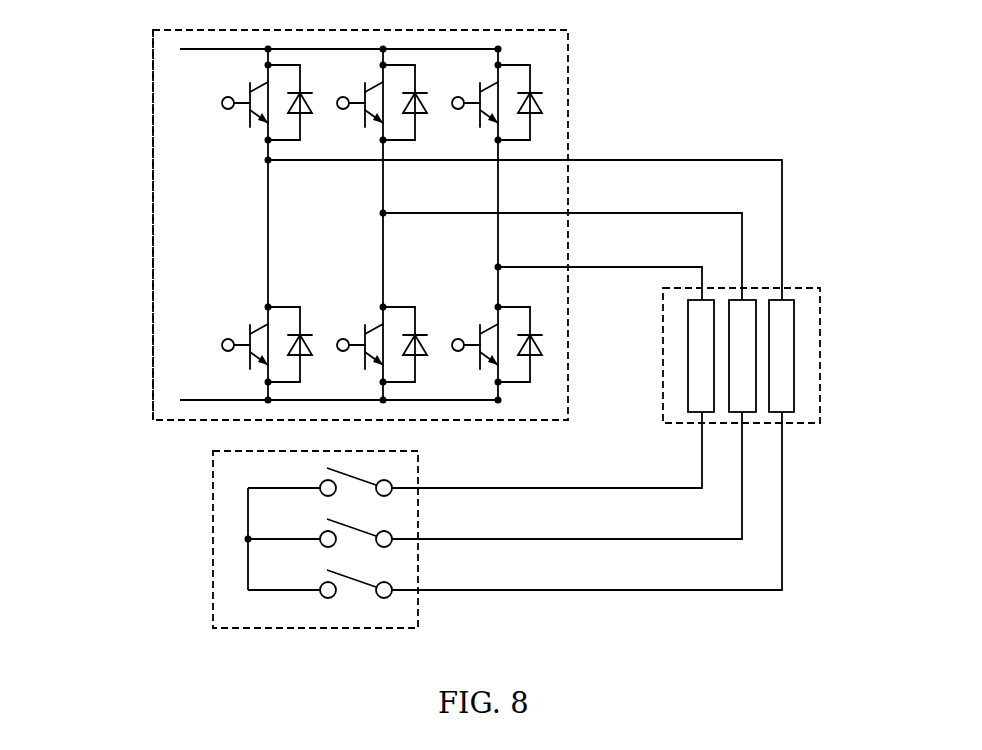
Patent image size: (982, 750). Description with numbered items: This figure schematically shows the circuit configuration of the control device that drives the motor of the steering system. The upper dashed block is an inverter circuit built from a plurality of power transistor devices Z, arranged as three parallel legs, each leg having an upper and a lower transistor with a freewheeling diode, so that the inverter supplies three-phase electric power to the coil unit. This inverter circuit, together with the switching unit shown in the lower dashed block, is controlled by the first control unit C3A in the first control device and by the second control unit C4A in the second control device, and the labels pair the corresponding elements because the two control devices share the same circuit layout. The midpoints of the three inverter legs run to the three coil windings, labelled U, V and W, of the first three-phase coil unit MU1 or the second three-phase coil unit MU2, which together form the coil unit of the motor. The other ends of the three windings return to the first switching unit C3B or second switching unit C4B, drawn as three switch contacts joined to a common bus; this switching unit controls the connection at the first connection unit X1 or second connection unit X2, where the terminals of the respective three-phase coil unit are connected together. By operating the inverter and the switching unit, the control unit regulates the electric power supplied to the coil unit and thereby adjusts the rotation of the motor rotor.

The power transistor device Z is at (532, 77).
The first control unit C3A is at (82, 225).
The second control unit C4A is at (152, 197).
The first switching unit C3B is at (238, 539).
The second switching unit C4B is at (212, 492).
The first three-phase coil unit MU1 is at (795, 326).
The second three-phase coil unit MU2 is at (808, 281).
The first connection unit X1 is at (237, 533).
The second connection unit X2 is at (246, 539).